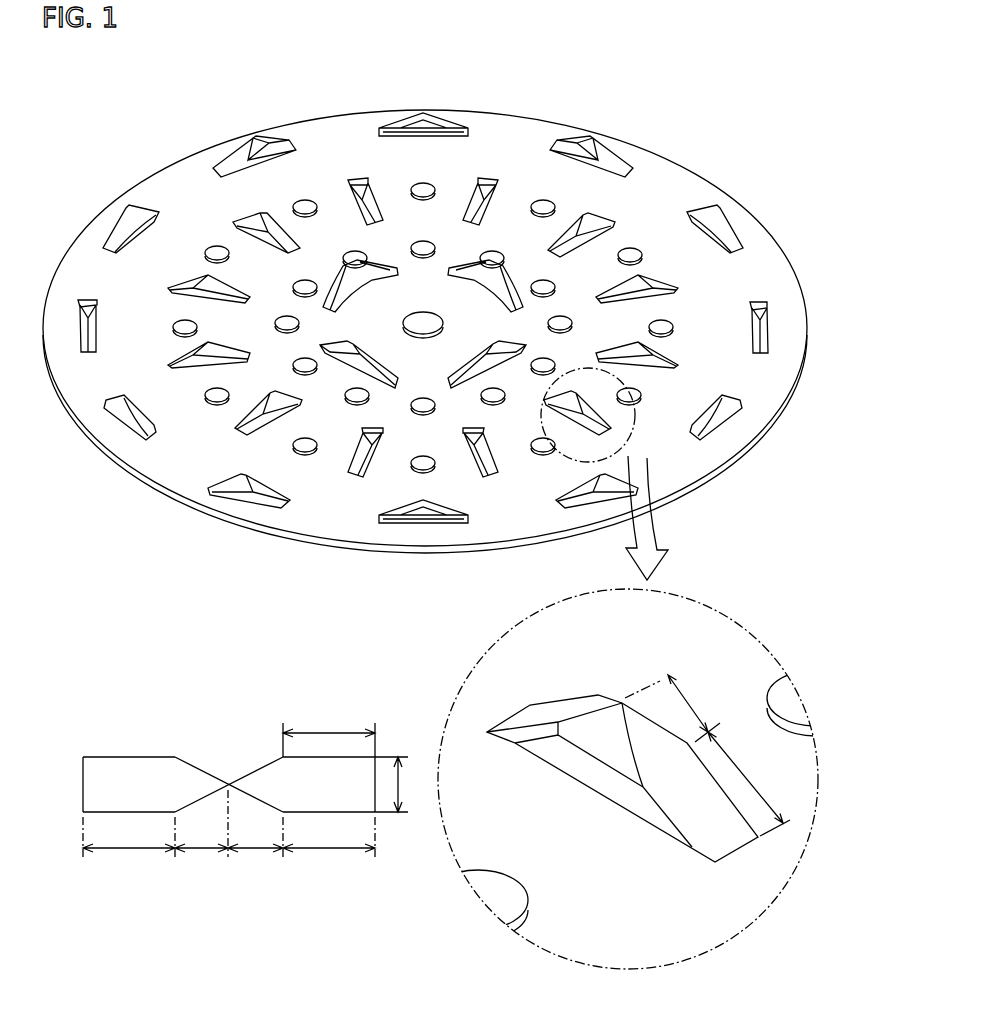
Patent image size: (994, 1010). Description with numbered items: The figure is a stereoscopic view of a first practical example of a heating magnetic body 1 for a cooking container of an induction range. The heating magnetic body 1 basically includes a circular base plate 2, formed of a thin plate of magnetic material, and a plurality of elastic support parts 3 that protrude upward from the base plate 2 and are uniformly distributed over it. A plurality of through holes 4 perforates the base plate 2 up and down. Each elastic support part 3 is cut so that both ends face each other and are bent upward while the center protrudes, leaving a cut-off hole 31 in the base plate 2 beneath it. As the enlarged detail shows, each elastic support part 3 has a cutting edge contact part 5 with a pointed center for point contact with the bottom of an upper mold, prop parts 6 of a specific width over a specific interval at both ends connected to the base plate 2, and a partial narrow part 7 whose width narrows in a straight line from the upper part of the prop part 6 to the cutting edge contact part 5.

The heating magnetic body 1 is at (425, 291).
The base plate 2 is at (187, 180).
The elastic support part 3 is at (448, 507).
The through hole 4 is at (540, 203).
The cutting edge contact part 5 is at (622, 703).
The prop part 6 is at (436, 807).
The partial narrow part 7 is at (447, 778).
The cut-off hole 31 is at (570, 763).